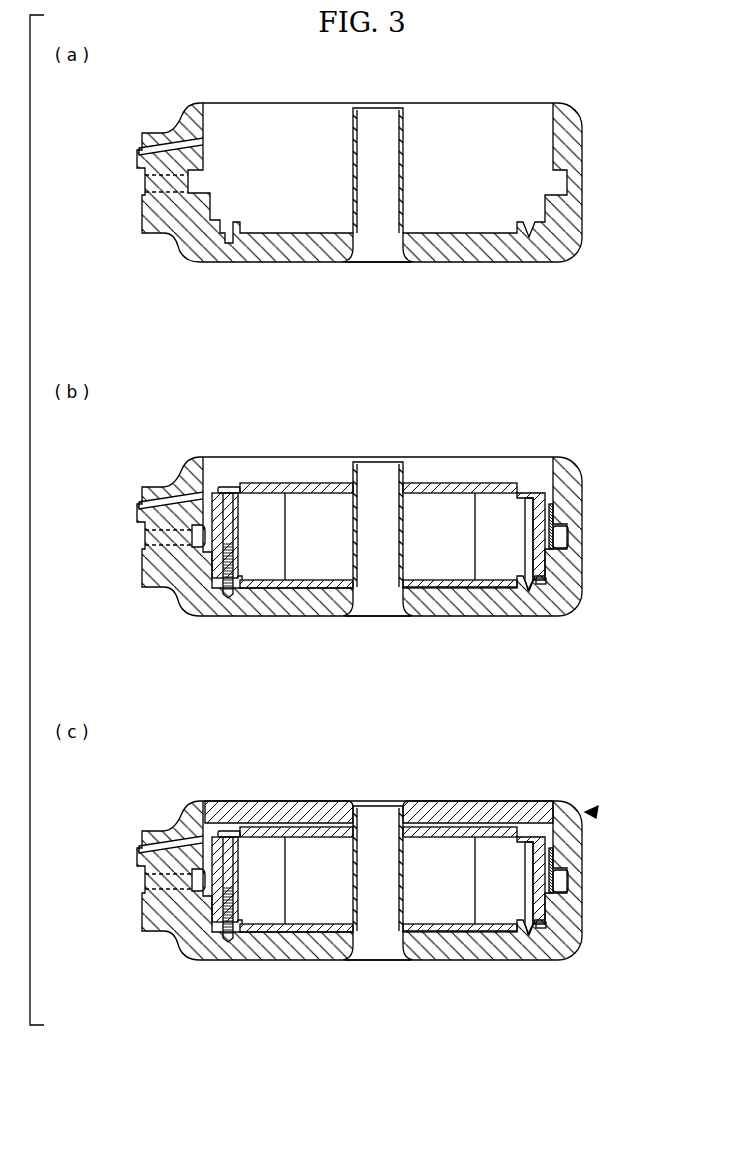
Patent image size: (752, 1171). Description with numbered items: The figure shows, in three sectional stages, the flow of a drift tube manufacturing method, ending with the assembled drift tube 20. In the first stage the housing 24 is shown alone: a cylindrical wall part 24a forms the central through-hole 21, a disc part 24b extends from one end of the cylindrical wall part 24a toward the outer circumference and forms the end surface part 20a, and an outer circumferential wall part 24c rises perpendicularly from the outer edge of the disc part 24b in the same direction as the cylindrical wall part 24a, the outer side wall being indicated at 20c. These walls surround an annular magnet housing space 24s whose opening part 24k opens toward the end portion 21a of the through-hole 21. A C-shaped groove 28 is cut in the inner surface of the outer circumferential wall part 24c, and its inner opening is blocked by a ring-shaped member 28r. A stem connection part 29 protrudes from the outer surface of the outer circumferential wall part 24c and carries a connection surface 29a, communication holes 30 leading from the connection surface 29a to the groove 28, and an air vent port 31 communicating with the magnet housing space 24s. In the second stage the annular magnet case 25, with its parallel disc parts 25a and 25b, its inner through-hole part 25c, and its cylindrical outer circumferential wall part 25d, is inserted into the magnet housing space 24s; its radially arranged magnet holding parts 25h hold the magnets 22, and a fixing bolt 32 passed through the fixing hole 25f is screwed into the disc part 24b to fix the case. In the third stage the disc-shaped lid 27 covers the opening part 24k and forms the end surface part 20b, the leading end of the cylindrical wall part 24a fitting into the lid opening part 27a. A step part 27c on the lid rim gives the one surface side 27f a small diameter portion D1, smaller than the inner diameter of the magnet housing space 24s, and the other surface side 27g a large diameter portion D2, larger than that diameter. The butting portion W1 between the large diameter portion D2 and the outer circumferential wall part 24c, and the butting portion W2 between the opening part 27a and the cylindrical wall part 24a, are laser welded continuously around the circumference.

The drift tube 20 is at (598, 812).
The end surface part 20a is at (508, 263).
The end surface part 20b is at (490, 802).
The side wall 20c is at (583, 205).
The through-hole 21 is at (386, 263).
The end portion 21a is at (392, 108).
The magnets 22 is at (322, 498).
The housing 24 is at (584, 160).
The cylindrical wall part 24a is at (378, 611).
The disc part 24b is at (325, 263).
The outer circumferential wall part 24c is at (587, 124).
The opening part 24k is at (208, 103).
The magnet housing space 24s is at (445, 233).
The magnet case 25 is at (490, 483).
The disc part 25a is at (460, 484).
The disc part 25b is at (493, 590).
The through-hole part 25c is at (402, 585).
The cylindrical outer circumferential wall part 25d is at (548, 584).
The fixing hole 25f is at (535, 500).
The magnet holding parts 25h is at (477, 573).
The lid 27 is at (337, 801).
The opening part 27a is at (414, 826).
The step part 27c is at (186, 802).
The one surface side 27f is at (326, 840).
The other surface side 27g is at (284, 806).
The C-shaped groove 28 is at (560, 190).
The ring-shaped member 28r is at (556, 520).
The stem connection part 29 is at (170, 240).
The connection surface 29a is at (139, 228).
The communication holes 30 is at (147, 183).
The air vent port 31 is at (175, 128).
The fixing bolt 32 is at (229, 487).
The butting portion W1 is at (204, 801).
The butting portion W2 is at (363, 798).
The small diameter portion D1 is at (578, 808).
The large diameter portion D2 is at (562, 806).